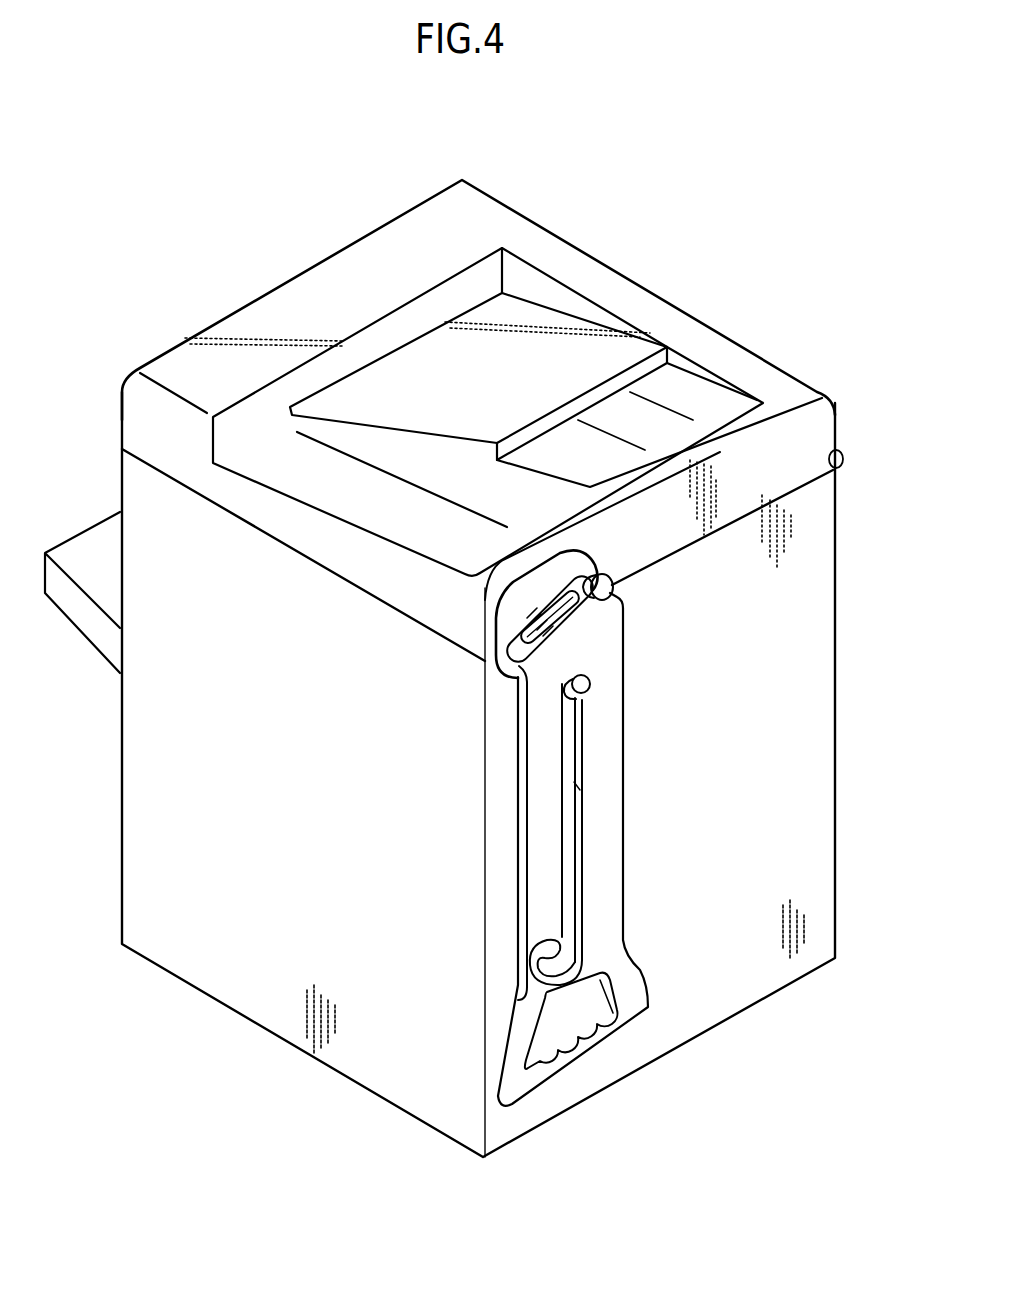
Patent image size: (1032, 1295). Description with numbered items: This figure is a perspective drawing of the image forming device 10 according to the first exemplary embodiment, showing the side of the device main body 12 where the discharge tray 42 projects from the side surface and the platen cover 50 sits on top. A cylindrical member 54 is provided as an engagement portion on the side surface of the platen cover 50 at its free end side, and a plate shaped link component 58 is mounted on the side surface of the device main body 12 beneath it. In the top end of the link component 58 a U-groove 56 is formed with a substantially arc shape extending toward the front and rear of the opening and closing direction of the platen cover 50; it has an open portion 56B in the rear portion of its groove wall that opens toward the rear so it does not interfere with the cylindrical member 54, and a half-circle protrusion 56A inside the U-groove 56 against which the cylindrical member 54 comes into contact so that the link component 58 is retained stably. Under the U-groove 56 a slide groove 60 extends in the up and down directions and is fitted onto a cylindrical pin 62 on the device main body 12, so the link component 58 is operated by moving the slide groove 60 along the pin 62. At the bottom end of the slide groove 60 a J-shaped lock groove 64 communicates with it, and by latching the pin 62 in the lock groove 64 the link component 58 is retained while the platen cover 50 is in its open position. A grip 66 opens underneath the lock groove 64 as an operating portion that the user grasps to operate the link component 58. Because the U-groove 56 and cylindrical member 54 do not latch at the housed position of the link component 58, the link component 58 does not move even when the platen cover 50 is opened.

The image forming device 10 is at (748, 216).
The device main body 12 is at (818, 702).
The discharge tray 42 is at (63, 600).
The platen cover 50 is at (735, 360).
The cylindrical member 54 is at (607, 575).
The U-groove 56 is at (573, 603).
The half-circle protrusion 56A is at (540, 613).
The open portion 56B is at (567, 538).
The link component 58 is at (608, 810).
The slide groove 60 is at (588, 787).
The cylindrical pin 62 is at (590, 688).
The lock groove 64 is at (528, 972).
The grip 66 is at (618, 1003).